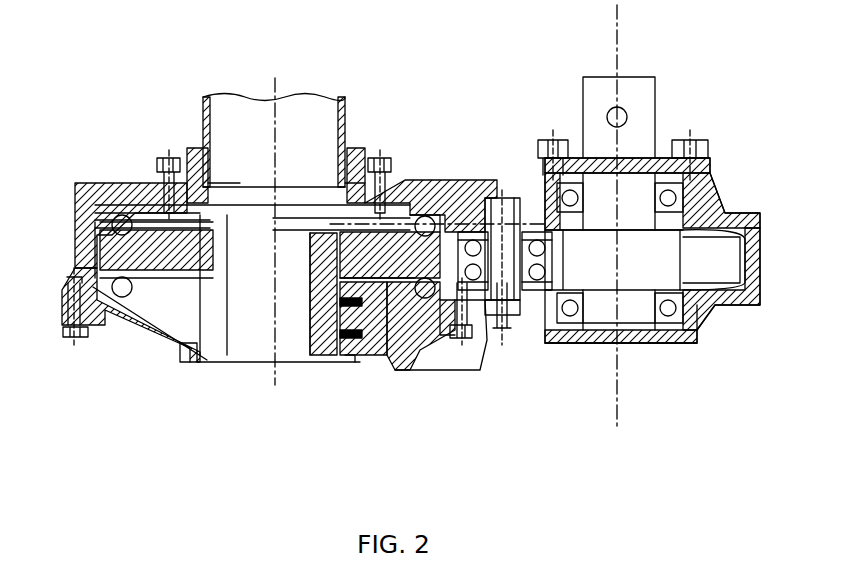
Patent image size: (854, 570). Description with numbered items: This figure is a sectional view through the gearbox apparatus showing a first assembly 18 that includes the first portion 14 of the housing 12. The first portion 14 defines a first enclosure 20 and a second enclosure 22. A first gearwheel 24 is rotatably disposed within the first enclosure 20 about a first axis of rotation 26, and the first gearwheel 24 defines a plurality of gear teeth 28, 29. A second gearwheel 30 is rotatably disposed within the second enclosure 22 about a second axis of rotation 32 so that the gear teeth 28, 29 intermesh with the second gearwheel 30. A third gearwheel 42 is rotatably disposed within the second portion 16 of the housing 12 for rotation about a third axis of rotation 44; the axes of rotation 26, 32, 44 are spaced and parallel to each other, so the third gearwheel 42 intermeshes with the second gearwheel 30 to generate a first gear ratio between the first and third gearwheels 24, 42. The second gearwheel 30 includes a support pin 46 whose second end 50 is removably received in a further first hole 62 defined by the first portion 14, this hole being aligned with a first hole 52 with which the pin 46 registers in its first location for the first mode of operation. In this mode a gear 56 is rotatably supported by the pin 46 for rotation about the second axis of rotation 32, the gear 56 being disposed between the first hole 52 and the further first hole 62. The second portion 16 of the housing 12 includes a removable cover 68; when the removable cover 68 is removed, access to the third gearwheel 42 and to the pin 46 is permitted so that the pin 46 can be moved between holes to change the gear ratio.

The housing 12 is at (72, 297).
The first portion of the housing 14 is at (773, 312).
The second portion of the housing 16 is at (62, 236).
The first assembly 18 is at (567, 350).
The first enclosure 20 is at (730, 305).
The second enclosure 22 is at (500, 195).
The first gearwheel 24 is at (578, 232).
The first axis of rotation 26 is at (620, 290).
The gear teeth 28 is at (692, 252).
The gear teeth 29 is at (538, 313).
The second gearwheel 30 is at (447, 332).
The second axis of rotation 32 is at (435, 195).
The third gearwheel 42 is at (125, 248).
The third axis of rotation 44 is at (275, 132).
The support pin 46 is at (462, 245).
The second end of the pin 50 is at (548, 140).
The first hole 52 is at (497, 210).
The gear 56 is at (392, 350).
The further first hole 62 is at (517, 332).
The removable cover 68 is at (420, 322).